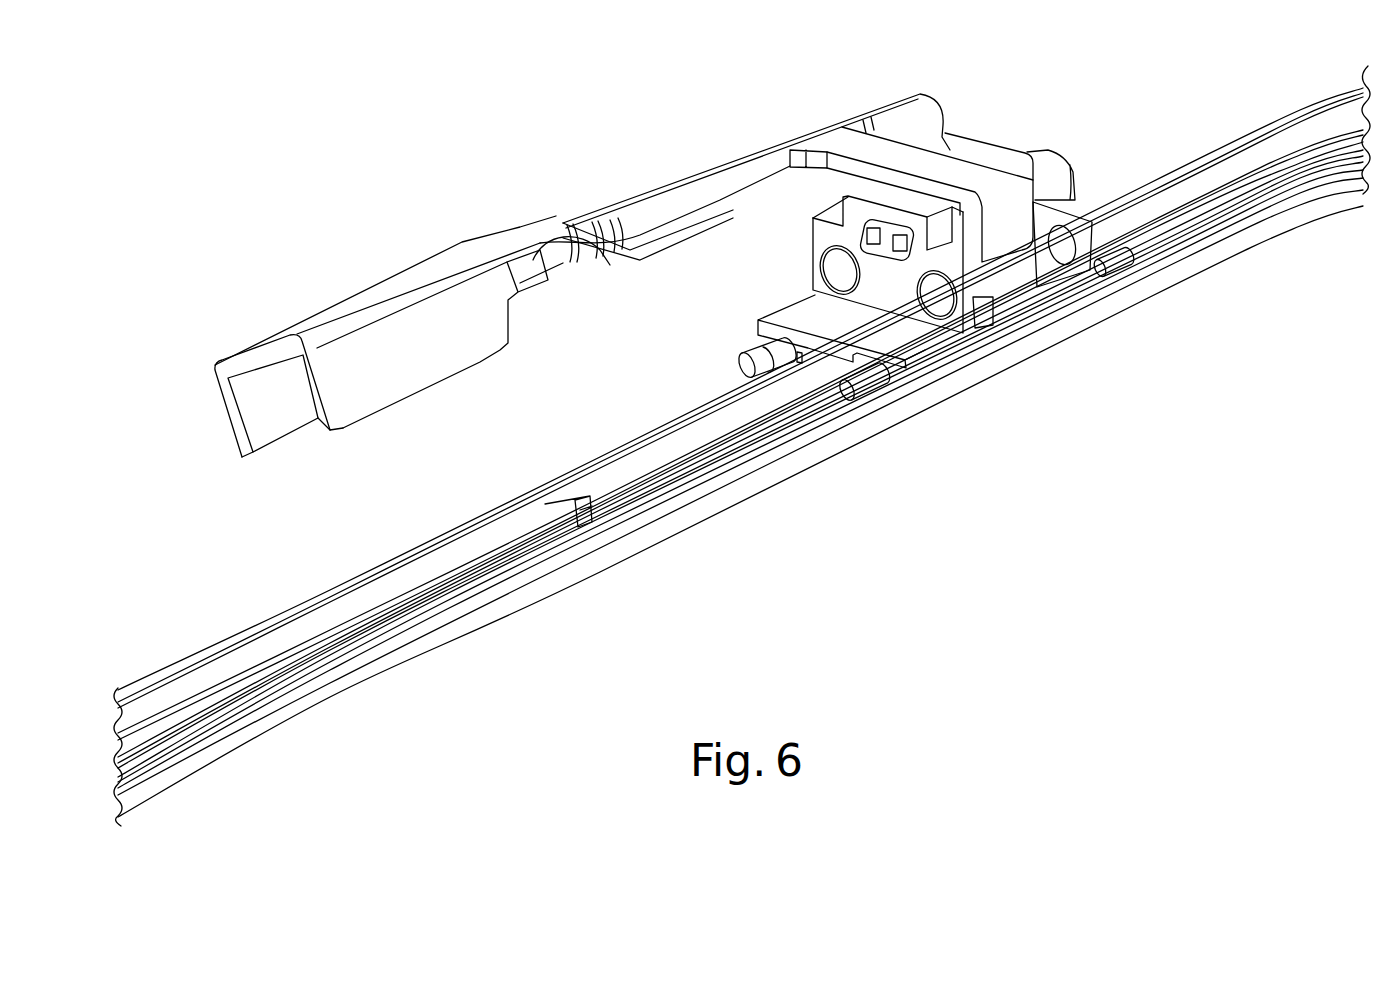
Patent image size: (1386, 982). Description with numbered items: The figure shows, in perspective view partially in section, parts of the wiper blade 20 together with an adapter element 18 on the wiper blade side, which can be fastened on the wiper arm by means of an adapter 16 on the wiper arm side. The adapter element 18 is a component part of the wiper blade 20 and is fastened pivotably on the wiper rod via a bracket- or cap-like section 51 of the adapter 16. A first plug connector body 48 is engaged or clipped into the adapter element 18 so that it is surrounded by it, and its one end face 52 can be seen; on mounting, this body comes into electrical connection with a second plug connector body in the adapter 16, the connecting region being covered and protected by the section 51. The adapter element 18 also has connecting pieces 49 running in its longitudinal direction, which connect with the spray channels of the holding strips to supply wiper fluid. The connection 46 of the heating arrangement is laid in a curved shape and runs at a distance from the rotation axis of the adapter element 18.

The adapter 16 is at (370, 307).
The adapter element 18 is at (1057, 182).
The wiper blade 20 is at (712, 138).
The connection 46 is at (1090, 205).
The first plug connector body 48 is at (812, 270).
The connecting pieces 49 is at (743, 366).
The bracket- or cap-like section 51 is at (850, 145).
The end face 52 is at (887, 236).